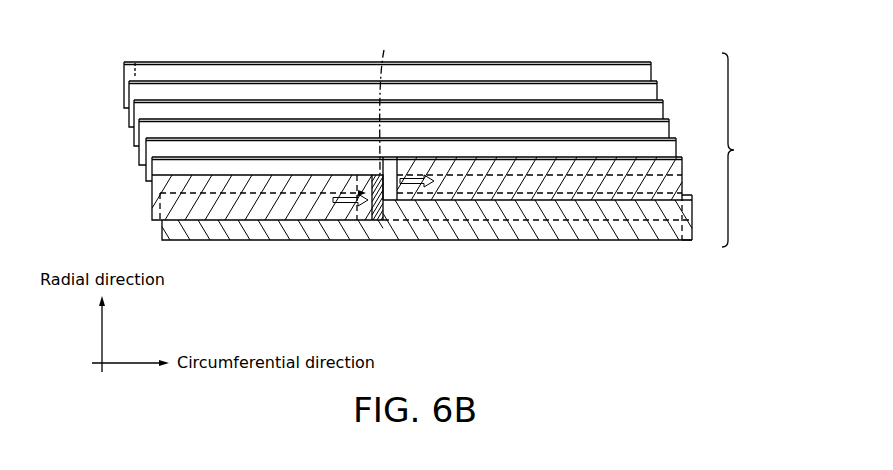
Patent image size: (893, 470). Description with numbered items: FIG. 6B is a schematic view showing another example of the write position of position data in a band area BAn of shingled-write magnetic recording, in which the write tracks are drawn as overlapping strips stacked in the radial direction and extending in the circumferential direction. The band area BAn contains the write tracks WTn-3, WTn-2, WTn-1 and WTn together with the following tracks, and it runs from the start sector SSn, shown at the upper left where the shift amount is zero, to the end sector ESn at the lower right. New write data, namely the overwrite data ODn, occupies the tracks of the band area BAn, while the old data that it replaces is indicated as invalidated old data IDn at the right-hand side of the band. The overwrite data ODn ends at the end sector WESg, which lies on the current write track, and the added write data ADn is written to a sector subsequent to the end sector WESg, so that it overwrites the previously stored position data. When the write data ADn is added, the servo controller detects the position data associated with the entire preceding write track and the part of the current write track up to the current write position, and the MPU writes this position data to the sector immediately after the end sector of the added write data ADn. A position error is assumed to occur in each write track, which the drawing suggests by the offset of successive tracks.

The write track WTn-3 is at (124, 73).
The write track WTn-2 is at (129, 93).
The write track WTn-1 is at (134, 113).
The write track WTn is at (139, 149).
The start sector SSn is at (150, 49).
The overwrite data ODn is at (472, 106).
The invalidated old data IDn is at (662, 178).
The band area BAn is at (748, 150).
The write data ADn is at (237, 212).
The end sector WESg is at (388, 205).
The end sector ESn is at (684, 242).